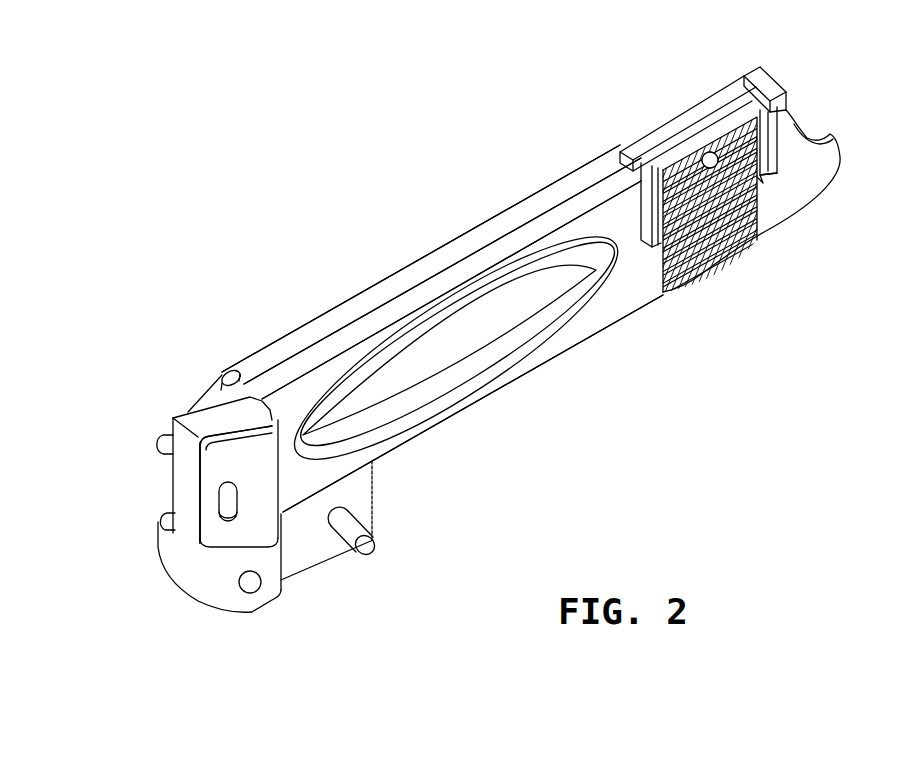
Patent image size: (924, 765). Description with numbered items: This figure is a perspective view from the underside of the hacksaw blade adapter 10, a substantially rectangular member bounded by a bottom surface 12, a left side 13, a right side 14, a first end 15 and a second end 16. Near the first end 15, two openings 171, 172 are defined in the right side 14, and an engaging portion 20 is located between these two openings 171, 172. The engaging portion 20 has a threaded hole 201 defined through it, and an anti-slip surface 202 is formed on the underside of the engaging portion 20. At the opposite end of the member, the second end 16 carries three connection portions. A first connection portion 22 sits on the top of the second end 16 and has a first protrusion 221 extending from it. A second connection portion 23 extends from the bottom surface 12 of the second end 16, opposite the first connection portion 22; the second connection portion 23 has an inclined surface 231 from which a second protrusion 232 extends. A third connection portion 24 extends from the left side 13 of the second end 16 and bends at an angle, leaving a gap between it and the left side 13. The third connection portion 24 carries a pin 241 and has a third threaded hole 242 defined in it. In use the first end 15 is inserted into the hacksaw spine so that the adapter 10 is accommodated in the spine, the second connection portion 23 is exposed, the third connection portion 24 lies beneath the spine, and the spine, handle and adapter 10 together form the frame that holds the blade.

The hacksaw blade adapter 10 is at (477, 215).
The bottom surface 12 is at (617, 307).
The left side 13 is at (492, 391).
The right side 14 is at (423, 260).
The first end 15 is at (817, 132).
The second end 16 is at (178, 490).
The engaging portion 20 is at (713, 113).
The threaded hole 201 is at (704, 154).
The anti-slip surface 202 is at (750, 240).
The opening 171 is at (777, 178).
The opening 172 is at (663, 293).
The first connection portion 22 is at (187, 412).
The first protrusion 221 is at (153, 437).
The second connection portion 23 is at (243, 427).
The inclined surface 231 is at (245, 532).
The second protrusion 232 is at (226, 514).
The third connection portion 24 is at (298, 548).
The pin 241 is at (367, 546).
The third threaded hole 242 is at (248, 590).